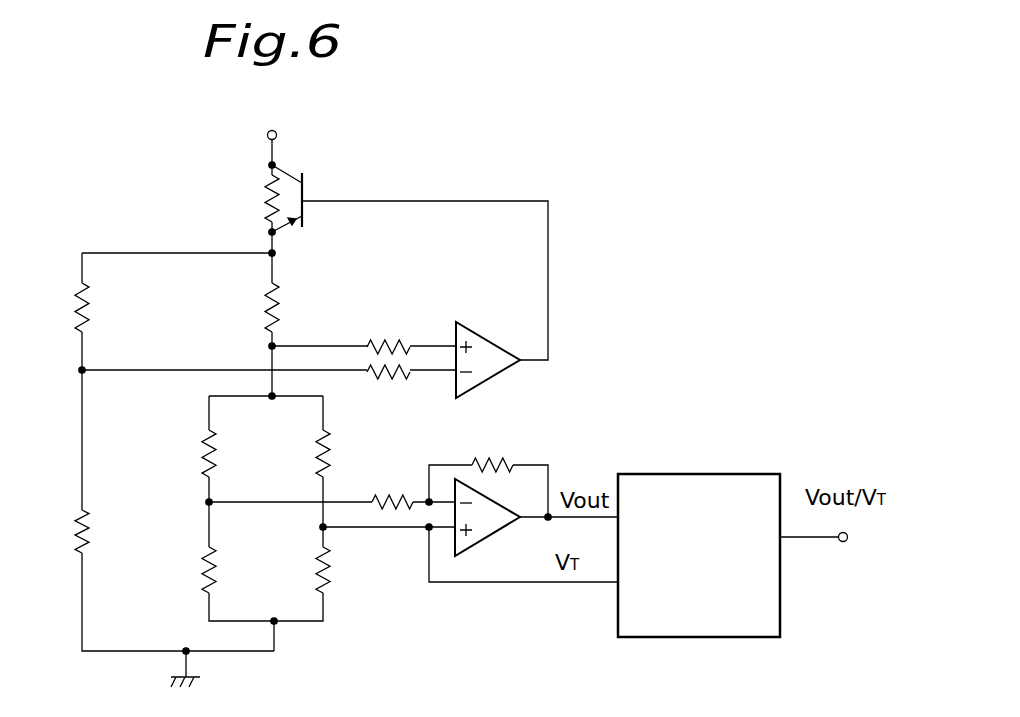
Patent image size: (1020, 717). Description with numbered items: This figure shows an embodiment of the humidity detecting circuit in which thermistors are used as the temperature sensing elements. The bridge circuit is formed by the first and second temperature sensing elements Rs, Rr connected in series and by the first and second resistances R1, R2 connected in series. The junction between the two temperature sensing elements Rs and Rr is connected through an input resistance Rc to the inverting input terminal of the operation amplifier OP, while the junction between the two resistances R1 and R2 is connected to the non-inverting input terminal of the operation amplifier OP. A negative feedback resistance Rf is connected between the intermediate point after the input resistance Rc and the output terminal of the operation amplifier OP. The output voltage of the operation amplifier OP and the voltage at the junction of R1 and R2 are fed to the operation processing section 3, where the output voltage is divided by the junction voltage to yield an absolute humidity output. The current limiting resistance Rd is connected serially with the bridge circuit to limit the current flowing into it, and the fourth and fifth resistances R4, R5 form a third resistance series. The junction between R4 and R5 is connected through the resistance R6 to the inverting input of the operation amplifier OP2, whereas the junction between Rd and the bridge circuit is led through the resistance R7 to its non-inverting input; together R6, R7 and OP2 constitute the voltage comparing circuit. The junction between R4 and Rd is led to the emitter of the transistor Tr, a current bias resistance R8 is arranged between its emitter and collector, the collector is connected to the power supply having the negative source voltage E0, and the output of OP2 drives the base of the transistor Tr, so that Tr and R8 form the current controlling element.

The operation processing section 3 is at (701, 474).
The transistor Tr is at (410, 259).
The current bias resistance R8 is at (256, 198).
The fourth resistance R4 is at (63, 307).
The fifth resistance R5 is at (63, 531).
The current limiting resistance Rd is at (292, 307).
The resistance R7 is at (388, 332).
The resistance R6 is at (388, 387).
The operation amplifier OP2 is at (490, 354).
The first temperature sensing element Rs is at (194, 453).
The first resistance R1 is at (340, 453).
The second temperature sensing element Rr is at (194, 570).
The second resistance R2 is at (340, 570).
The input resistance Rc is at (392, 488).
The negative feedback resistance Rf is at (488, 472).
The operation amplifier OP is at (495, 516).
The source voltage E0 is at (275, 135).